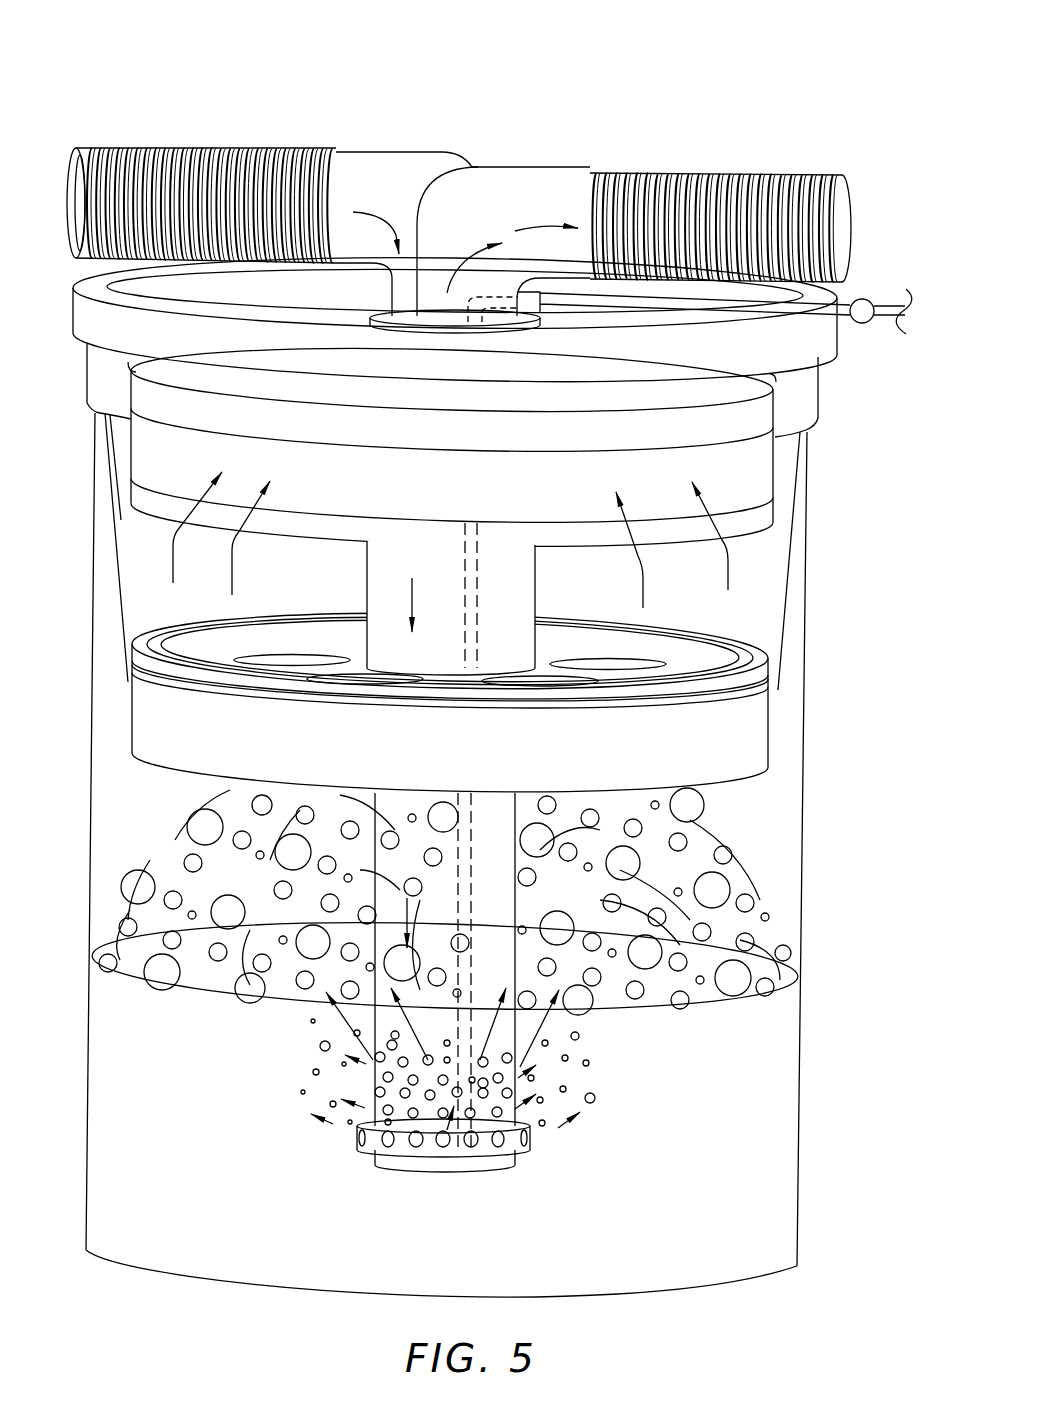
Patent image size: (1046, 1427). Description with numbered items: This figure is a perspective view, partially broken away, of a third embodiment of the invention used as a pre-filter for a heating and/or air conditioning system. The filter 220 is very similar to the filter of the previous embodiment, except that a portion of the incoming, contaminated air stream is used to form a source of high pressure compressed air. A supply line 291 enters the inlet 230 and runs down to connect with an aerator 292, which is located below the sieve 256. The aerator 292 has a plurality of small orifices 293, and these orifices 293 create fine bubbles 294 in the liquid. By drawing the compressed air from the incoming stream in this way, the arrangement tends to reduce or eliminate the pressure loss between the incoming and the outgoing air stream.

The filter 220 is at (455, 775).
The inlet 230 is at (373, 172).
The supply line 291 is at (790, 307).
The sieve 256 is at (508, 1069).
The aerator 292 is at (367, 1148).
The orifices 293 is at (453, 1147).
The bubbles 294 is at (313, 1070).